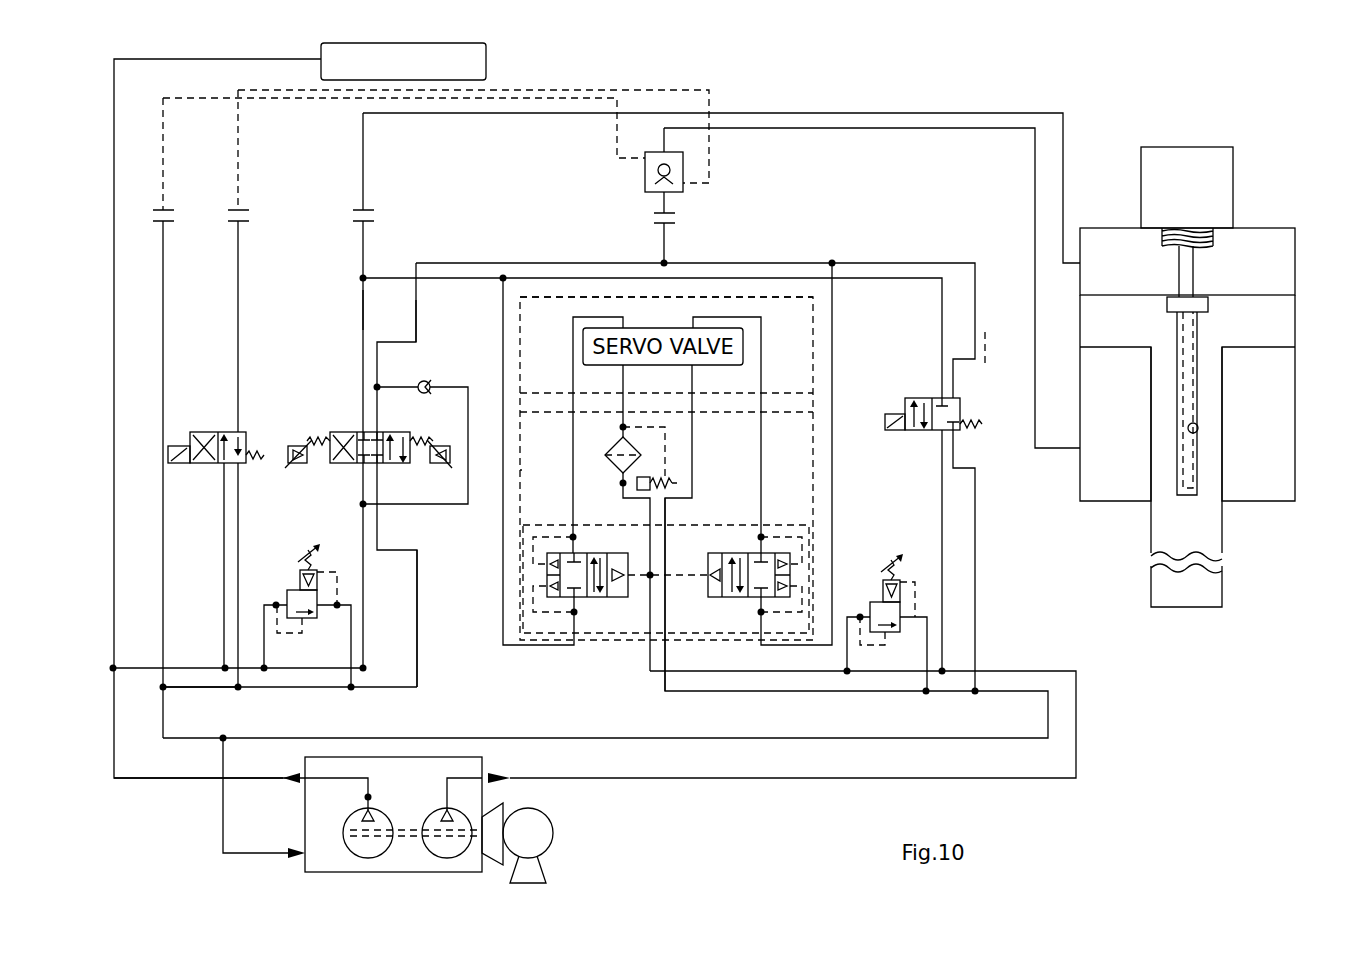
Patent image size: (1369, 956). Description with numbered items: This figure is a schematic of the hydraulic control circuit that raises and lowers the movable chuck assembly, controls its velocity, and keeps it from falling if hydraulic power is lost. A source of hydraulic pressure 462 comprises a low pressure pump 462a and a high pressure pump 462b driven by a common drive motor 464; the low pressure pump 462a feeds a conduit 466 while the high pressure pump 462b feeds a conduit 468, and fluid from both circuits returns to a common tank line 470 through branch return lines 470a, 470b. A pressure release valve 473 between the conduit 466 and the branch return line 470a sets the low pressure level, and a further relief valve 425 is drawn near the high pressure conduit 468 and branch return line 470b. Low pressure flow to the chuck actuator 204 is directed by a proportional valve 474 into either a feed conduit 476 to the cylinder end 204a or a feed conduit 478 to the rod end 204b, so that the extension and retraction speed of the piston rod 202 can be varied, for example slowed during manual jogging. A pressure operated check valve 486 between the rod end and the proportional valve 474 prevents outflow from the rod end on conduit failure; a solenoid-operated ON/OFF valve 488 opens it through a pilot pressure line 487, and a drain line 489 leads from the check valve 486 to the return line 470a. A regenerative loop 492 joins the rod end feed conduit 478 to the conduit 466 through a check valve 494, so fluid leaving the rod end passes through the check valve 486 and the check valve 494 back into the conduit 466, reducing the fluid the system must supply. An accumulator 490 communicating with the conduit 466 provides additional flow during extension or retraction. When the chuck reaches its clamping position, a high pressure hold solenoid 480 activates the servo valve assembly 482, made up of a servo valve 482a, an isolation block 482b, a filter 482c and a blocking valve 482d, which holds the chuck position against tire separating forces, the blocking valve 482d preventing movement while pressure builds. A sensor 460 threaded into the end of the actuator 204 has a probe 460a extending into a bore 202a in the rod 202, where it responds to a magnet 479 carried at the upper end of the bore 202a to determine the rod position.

The accumulator 490 is at (487, 70).
The pilot pressure line 487 is at (240, 176).
The drain line 489 is at (617, 136).
The pressure operated check valve 486 is at (632, 178).
The solenoid-operated ON/OFF valve 488 is at (205, 420).
The proportional valve 474 is at (328, 420).
The feed conduit 476 is at (364, 303).
The feed conduit 478 is at (418, 332).
The check valve 494 is at (430, 379).
The pressure release valve 473 is at (280, 568).
The regenerative loop 492 is at (457, 522).
The branch return line 470a is at (186, 690).
The branch return line 470b is at (770, 742).
The return or tank line 470 is at (243, 854).
The conduit 466 is at (240, 780).
The conduit 468 is at (990, 780).
The source of hydraulic pressure 462 is at (451, 831).
The low pressure pump 462a is at (375, 845).
The high pressure pump 462b is at (453, 845).
The drive motor 464 is at (552, 828).
The servo valve assembly 482 is at (824, 316).
The servo valve 482a is at (800, 357).
The isolation block 482b is at (800, 408).
The filter 482c is at (800, 470).
The blocking valve 482d is at (805, 575).
The high pressure hold solenoid 480 is at (921, 388).
The relief valve 425 is at (912, 566).
The chuck actuator 204 is at (1220, 377).
The cylinder end 204a is at (1187, 261).
The rod end 204b is at (1187, 398).
The sensor 460 is at (1170, 200).
The probe 460a is at (1190, 280).
The magnet 479 is at (1212, 303).
The piston rod 202 is at (1200, 526).
The bore 202a is at (1196, 433).